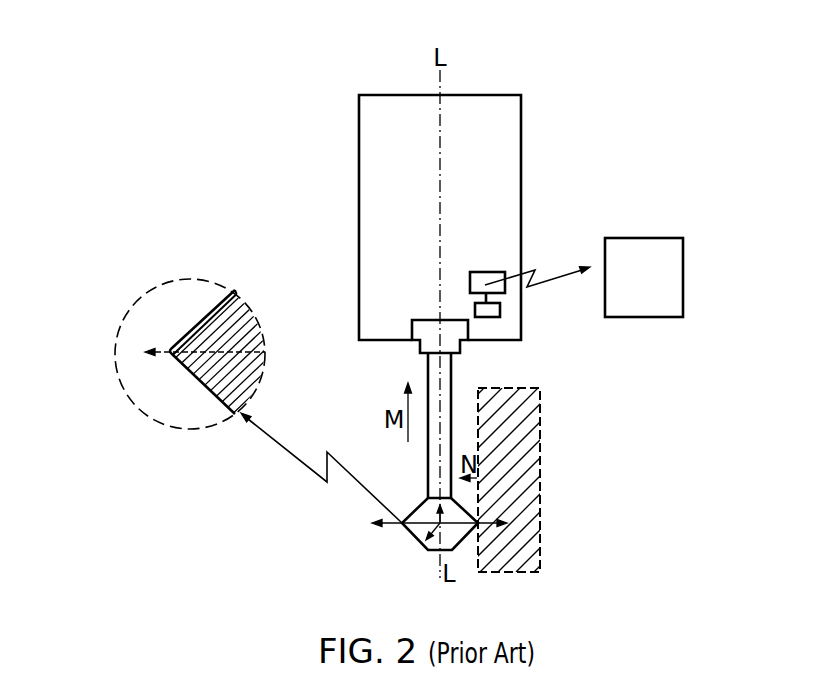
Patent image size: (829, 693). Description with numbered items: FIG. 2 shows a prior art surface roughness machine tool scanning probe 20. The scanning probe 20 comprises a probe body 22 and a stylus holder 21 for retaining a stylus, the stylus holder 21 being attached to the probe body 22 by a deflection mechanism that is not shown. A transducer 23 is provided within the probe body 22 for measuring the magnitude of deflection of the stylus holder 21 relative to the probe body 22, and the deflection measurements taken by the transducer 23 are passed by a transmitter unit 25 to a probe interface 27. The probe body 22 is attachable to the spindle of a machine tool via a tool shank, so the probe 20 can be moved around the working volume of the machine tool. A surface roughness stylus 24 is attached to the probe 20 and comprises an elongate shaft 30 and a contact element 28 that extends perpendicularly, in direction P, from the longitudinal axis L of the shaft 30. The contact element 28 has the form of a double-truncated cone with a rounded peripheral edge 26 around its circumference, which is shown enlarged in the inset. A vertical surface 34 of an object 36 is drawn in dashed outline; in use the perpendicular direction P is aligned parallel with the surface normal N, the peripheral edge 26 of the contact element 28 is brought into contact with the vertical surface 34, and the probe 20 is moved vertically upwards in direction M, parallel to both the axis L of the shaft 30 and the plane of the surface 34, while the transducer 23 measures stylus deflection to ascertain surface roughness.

The scanning probe 20 is at (640, 147).
The stylus holder 21 is at (468, 335).
The probe body 22 is at (522, 177).
The transducer 23 is at (475, 310).
The surface roughness stylus 24 is at (450, 448).
The transmitter unit 25 is at (481, 272).
The rounded peripheral edge 26 is at (168, 350).
The probe interface 27 is at (628, 293).
The contact element 28 is at (212, 337).
The elongate shaft 30 is at (438, 447).
The vertical surface 34 is at (478, 428).
The object 36 is at (540, 442).